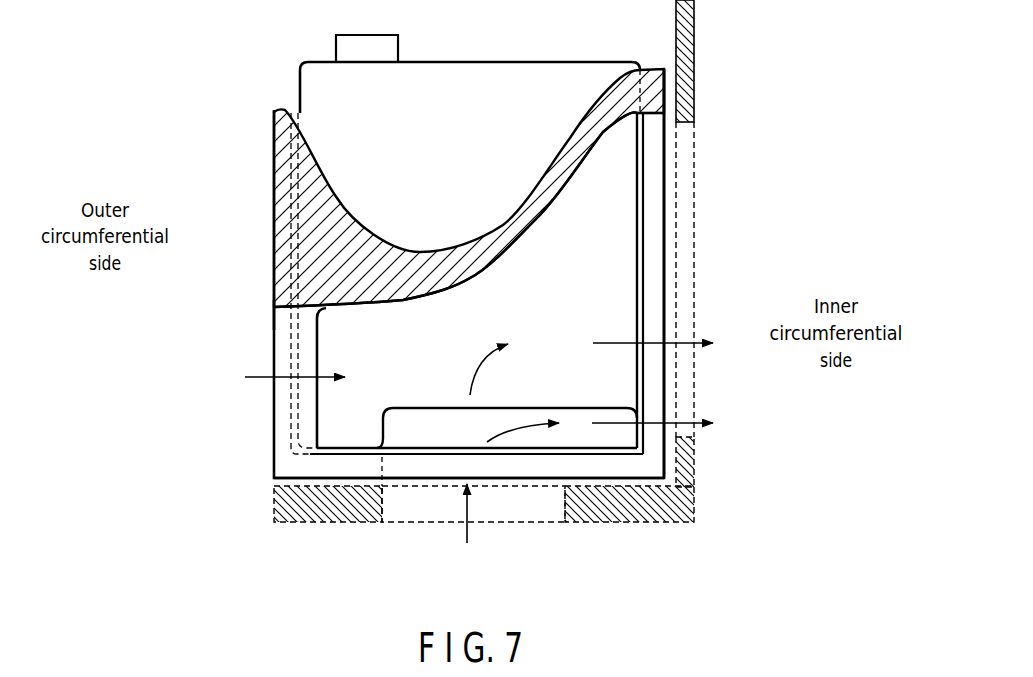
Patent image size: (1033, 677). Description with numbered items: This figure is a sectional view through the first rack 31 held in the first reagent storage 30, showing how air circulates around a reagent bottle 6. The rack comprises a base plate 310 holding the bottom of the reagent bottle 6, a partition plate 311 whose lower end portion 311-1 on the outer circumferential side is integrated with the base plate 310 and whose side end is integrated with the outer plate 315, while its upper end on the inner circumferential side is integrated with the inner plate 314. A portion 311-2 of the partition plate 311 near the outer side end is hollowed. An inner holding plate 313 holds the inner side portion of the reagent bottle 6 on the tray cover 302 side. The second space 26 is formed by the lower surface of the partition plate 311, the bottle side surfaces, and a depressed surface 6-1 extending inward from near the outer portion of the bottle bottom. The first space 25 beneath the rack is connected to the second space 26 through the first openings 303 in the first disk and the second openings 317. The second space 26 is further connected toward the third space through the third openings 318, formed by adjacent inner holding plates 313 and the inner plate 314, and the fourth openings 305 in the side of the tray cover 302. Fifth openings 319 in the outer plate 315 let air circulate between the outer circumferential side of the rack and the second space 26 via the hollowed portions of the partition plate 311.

The reagent bottle 6 is at (444, 62).
The depressed surface 6-1 is at (605, 436).
The first space 25 is at (455, 547).
The second space 26 is at (613, 260).
The first reagent storage 30 is at (642, 531).
The first rack 31 is at (266, 102).
The tray cover 302 is at (697, 23).
The first opening 303 is at (415, 493).
The fourth opening 305 is at (683, 195).
The base plate 310 is at (627, 466).
The partition plate 311 is at (320, 216).
The lower end portion 311-1 is at (445, 295).
The hollowed portion 311-2 is at (305, 362).
The inner holding plate 313 is at (665, 155).
The inner plate 314 is at (650, 98).
The outer plate 315 is at (272, 314).
The second opening 317 is at (403, 462).
The third opening 318 is at (653, 298).
The fifth opening 319 is at (283, 393).